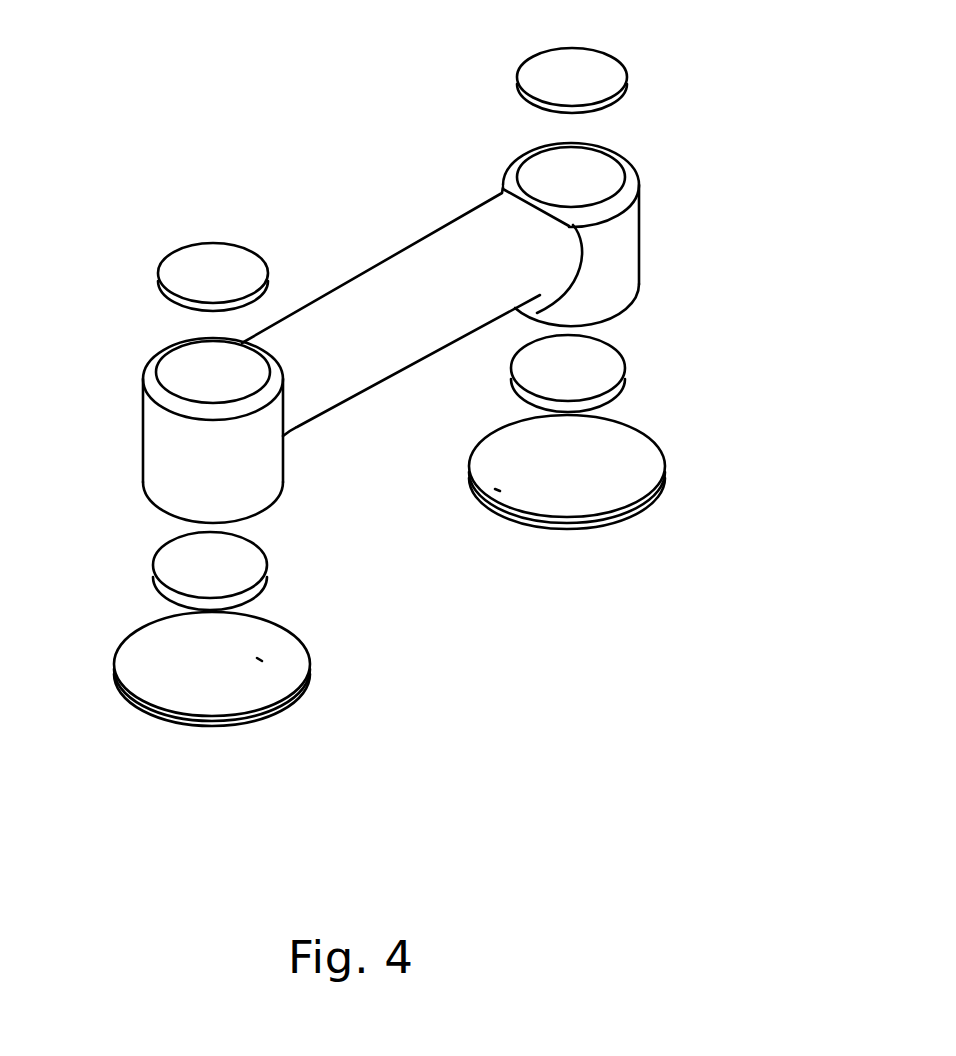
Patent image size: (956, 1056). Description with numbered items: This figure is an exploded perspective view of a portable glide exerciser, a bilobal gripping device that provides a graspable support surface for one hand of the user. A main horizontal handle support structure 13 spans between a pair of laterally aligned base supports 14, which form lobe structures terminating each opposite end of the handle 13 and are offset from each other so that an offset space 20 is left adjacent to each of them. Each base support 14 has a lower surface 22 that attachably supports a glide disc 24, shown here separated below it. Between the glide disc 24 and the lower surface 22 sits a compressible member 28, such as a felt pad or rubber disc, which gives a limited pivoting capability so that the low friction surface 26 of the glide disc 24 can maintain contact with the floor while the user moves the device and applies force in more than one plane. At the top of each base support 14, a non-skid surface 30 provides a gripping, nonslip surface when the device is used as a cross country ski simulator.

The main horizontal handle support structure 13 is at (395, 293).
The base support 14 is at (142, 410).
The offset space 20 is at (432, 370).
The lower surface 22 is at (147, 503).
The glide disc 24 is at (257, 658).
The low friction surface 26 is at (232, 728).
The compressible member 28 is at (160, 584).
The non-skid surface 30 is at (543, 93).